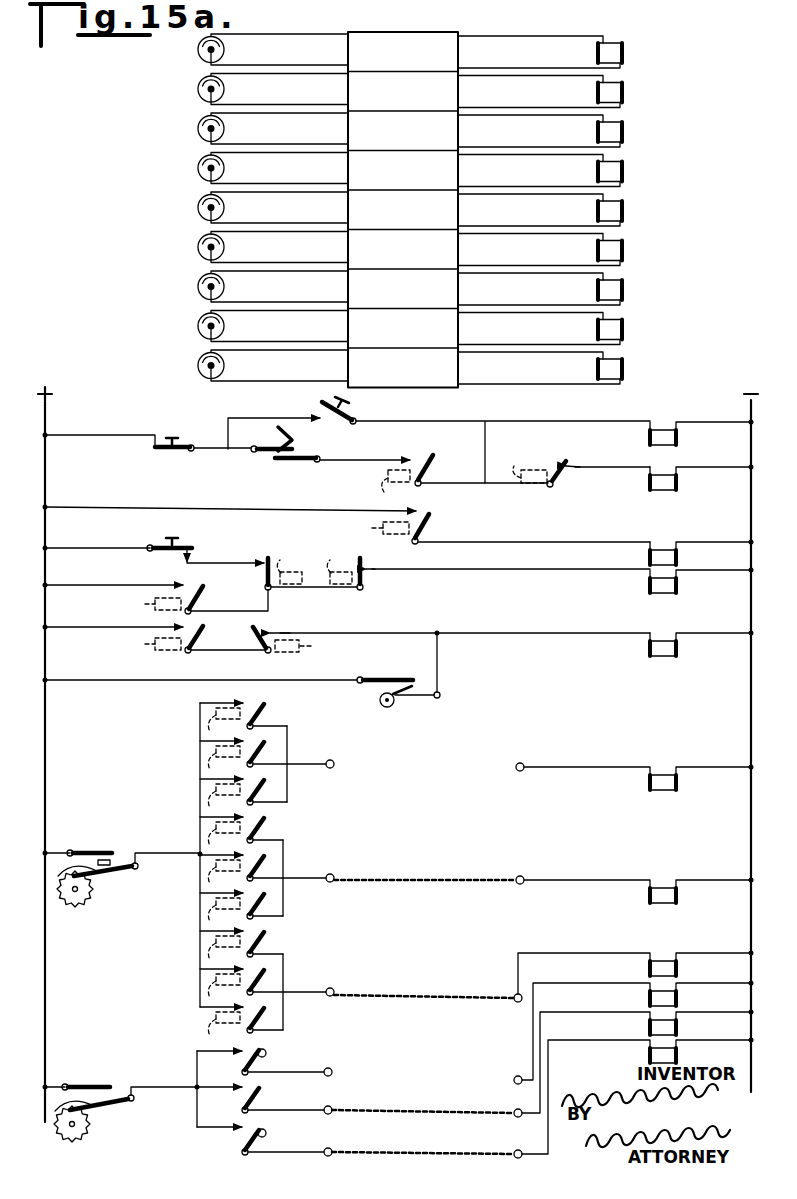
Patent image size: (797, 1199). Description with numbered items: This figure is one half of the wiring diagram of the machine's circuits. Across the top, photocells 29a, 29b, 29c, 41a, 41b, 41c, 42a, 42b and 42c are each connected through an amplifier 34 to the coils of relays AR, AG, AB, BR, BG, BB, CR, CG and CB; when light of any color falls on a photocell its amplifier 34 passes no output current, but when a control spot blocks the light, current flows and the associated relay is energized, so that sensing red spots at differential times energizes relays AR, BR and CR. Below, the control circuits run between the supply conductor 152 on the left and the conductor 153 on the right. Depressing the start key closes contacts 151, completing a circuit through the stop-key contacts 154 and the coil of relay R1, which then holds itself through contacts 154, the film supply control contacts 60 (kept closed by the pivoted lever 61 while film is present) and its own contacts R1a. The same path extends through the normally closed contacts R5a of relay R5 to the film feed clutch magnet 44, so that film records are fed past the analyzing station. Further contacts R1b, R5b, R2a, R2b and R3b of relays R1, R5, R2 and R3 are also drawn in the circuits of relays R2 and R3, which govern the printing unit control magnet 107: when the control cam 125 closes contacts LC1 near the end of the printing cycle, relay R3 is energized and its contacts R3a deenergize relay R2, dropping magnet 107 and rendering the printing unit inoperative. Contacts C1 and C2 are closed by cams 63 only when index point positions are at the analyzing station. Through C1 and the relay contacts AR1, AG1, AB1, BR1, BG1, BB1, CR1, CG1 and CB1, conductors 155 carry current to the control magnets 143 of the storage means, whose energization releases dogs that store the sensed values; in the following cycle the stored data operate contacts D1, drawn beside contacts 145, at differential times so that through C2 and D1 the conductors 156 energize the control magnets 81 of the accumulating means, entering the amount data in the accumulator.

The photocell 29a is at (198, 50).
The photocell 29b is at (198, 89).
The photocell 29c is at (198, 129).
The photocell 41a is at (198, 168).
The photocell 41b is at (198, 208).
The photocell 41c is at (198, 247).
The photocell 42a is at (198, 287).
The photocell 42b is at (198, 326).
The photocell 42c is at (198, 366).
The amplifier 34 is at (458, 63).
The relay AR is at (623, 55).
The relay AG is at (623, 94).
The relay AB is at (623, 134).
The relay BR is at (623, 174).
The relay BG is at (623, 213).
The relay BB is at (623, 252).
The relay CR is at (623, 292).
The relay CG is at (623, 332).
The relay CB is at (623, 371).
The conductor 152 is at (46, 488).
The conductor 153 is at (750, 516).
The stop key contacts 154 is at (150, 445).
The start key contacts 151 is at (318, 404).
The pivoted lever 61 is at (275, 431).
The film supply control contacts 60 is at (296, 457).
The relay contacts R1a is at (440, 449).
The relay R1 is at (677, 441).
The relay R5 is at (331, 531).
The relay contacts R5a is at (568, 462).
The film feed clutch magnet 44 is at (677, 484).
The relay R2 contact a R2a is at (429, 515).
The relay R2 is at (677, 589).
The printing unit control magnet 107 is at (677, 559).
The relay R1 contact b R1b is at (264, 560).
The relay contacts R3a is at (368, 567).
The relay R5 contact b R5b is at (194, 593).
The relay R2 contact b R2b is at (196, 633).
The relay R3 contact b R3b is at (270, 628).
The relay R3 is at (677, 652).
The contacts LC1 is at (427, 686).
The control cam 125 is at (394, 706).
The relay AR contact AR1 is at (265, 706).
The relay AG contact AG1 is at (265, 744).
The relay AB contact AB1 is at (265, 782).
The relay contacts BR1 is at (265, 820).
The relay BG contact BG1 is at (265, 858).
The relay BB contact BB1 is at (265, 896).
The relay contacts CR1 is at (265, 934).
The relay CG contact CG1 is at (265, 972).
The relay CB contact CB1 is at (265, 1010).
The control magnet 143 is at (677, 785).
The conductor 155 is at (410, 883).
The control magnet 81 is at (677, 1001).
The conductor 156 is at (395, 1112).
The contacts C1 is at (112, 858).
The cam 63 is at (94, 884).
The contacts C2 is at (118, 1095).
The contacts D1 is at (255, 1050).
The contact 145 is at (262, 1091).